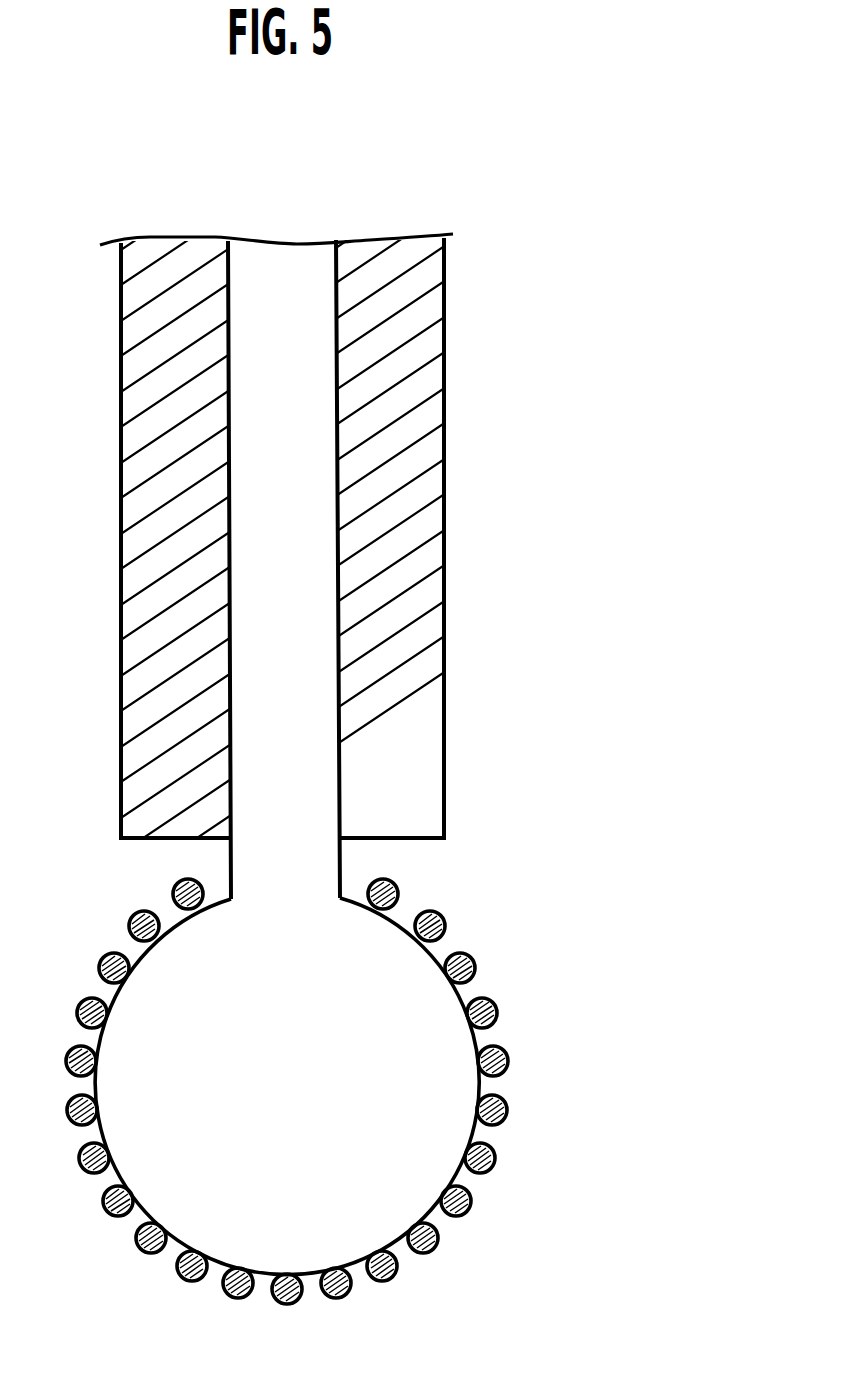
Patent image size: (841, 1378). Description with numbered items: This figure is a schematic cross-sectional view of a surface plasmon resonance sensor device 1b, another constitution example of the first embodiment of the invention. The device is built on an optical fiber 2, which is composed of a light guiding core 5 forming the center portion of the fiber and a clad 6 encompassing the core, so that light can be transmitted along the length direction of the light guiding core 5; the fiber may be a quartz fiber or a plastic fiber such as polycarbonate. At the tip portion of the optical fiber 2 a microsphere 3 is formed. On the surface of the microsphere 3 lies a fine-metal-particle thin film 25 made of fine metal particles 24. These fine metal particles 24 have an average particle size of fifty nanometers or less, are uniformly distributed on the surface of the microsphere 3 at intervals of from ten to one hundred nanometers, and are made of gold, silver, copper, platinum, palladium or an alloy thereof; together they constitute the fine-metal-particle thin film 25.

The surface plasmon resonance sensor device 1b is at (576, 251).
The optical fiber 2 is at (502, 538).
The light guiding core 5 is at (282, 283).
The clad 6 is at (445, 377).
The microsphere 3 is at (440, 1080).
The fine metal particles 24 is at (474, 956).
The fine-metal-particle thin film 25 is at (432, 1289).